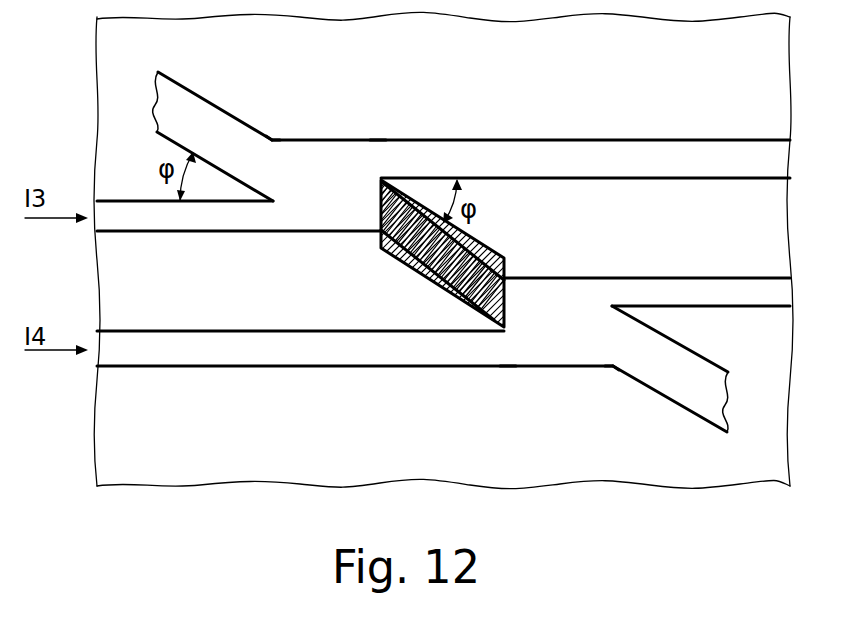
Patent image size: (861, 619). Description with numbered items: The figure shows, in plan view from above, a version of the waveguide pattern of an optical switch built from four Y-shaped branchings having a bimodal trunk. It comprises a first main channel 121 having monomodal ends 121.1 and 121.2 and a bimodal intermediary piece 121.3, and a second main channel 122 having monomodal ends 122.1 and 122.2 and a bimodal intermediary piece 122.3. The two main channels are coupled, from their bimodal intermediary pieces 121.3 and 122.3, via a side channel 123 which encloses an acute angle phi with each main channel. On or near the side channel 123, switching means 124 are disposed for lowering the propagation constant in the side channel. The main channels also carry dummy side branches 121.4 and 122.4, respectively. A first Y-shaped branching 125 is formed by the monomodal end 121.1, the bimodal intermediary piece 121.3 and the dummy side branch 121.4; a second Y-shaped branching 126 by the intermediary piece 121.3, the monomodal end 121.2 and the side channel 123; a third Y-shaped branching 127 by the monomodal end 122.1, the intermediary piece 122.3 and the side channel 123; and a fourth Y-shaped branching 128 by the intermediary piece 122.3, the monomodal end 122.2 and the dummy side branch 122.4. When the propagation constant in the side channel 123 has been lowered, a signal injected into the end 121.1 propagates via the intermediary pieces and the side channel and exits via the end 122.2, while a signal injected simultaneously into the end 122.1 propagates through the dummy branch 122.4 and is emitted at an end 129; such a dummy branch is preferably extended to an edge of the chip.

The first main channel 121 is at (510, 130).
The monomodal end of first main channel 121.1 is at (188, 217).
The monomodal end of first main channel 121.2 is at (695, 160).
The bimodal intermediary piece 121.3 is at (325, 187).
The dummy side branch 121.4 is at (203, 130).
The second main channel 122 is at (373, 377).
The monomodal end of second main channel 122.1 is at (190, 348).
The monomodal end of second main channel 122.2 is at (697, 293).
The bimodal intermediary piece 122.3 is at (560, 322).
The dummy side branch 122.4 is at (670, 368).
The side channel 123 is at (493, 243).
The switching means 124 is at (436, 289).
The first Y-shaped branching 125 is at (274, 128).
The second Y-shaped branching 126 is at (377, 128).
The third Y-shaped branching 127 is at (508, 385).
The fourth Y-shaped branching 128 is at (611, 385).
The end of dummy branch 129 is at (732, 403).